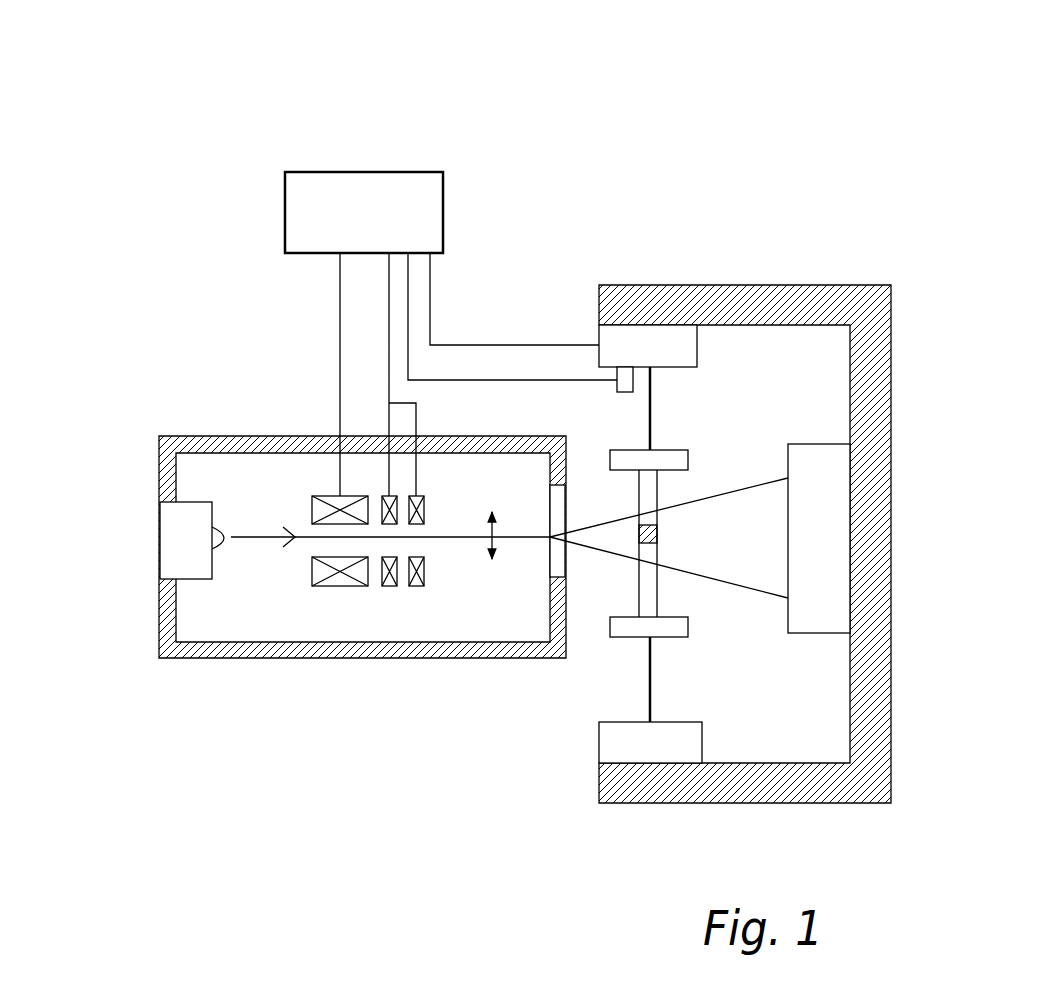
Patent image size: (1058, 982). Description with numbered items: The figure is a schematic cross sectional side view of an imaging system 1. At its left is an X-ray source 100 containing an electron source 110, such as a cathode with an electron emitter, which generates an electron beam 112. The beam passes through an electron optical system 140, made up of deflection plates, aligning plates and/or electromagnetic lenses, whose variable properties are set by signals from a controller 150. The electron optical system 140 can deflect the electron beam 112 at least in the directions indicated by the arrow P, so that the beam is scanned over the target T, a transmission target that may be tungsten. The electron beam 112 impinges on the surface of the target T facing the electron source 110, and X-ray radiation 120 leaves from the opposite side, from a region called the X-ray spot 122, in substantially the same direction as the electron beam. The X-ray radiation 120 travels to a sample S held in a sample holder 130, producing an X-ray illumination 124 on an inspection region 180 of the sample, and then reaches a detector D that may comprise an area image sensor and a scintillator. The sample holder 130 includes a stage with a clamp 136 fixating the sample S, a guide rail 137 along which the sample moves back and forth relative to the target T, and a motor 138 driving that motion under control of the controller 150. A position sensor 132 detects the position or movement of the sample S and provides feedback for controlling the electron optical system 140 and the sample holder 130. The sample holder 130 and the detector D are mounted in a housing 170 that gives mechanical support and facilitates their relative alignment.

The imaging system 1 is at (687, 97).
The X-ray source 100 is at (168, 363).
The electron source 110 is at (158, 528).
The electron beam 112 is at (256, 538).
The electron optical system 140 is at (355, 620).
The controller 150 is at (365, 172).
The target T is at (545, 557).
The arrow P is at (505, 527).
The housing 170 is at (728, 285).
The X-ray spot 122 is at (583, 522).
The X-ray illumination 124 is at (628, 548).
The sample holder 130 is at (548, 743).
The position sensor 132 is at (625, 365).
The sample S is at (657, 580).
The inspection region 180 is at (658, 528).
The clamp 136 is at (608, 625).
The guide rail 137 is at (650, 668).
The motor 138 is at (598, 743).
The X-ray radiation 120 is at (748, 588).
The detector D is at (815, 444).